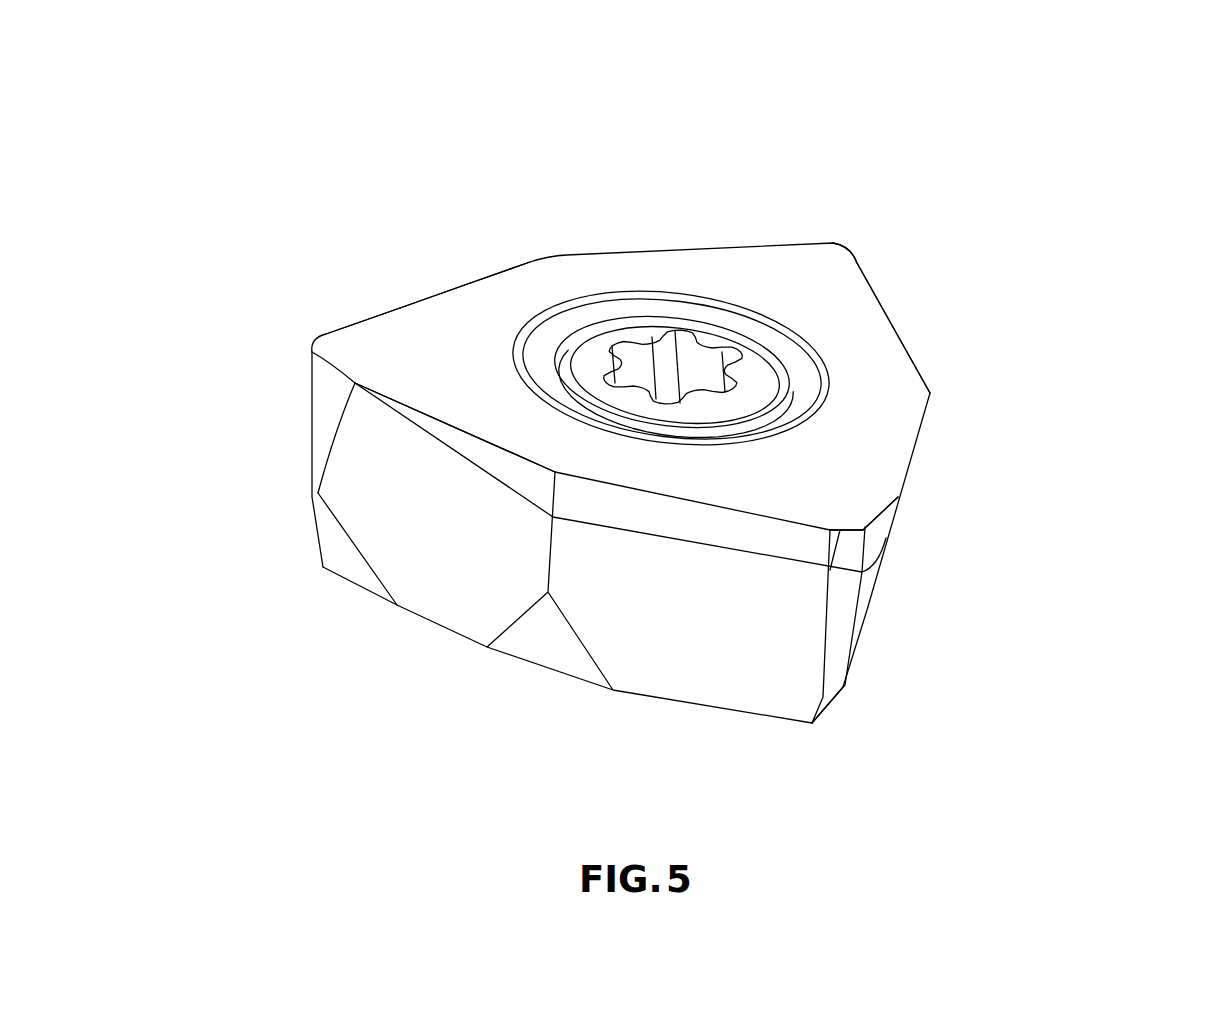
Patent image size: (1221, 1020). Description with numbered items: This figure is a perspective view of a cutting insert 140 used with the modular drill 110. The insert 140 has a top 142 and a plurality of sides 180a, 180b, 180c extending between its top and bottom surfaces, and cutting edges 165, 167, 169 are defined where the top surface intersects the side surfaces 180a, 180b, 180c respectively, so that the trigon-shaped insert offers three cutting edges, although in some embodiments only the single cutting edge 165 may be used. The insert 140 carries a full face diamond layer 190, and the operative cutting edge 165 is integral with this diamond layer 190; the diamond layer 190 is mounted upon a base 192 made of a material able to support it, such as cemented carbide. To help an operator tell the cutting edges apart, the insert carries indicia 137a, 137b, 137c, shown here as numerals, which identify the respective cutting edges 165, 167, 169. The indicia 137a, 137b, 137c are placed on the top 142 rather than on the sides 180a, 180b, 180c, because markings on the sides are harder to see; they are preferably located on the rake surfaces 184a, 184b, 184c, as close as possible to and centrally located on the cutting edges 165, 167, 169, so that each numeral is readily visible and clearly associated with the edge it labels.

The modular drill 110 is at (887, 74).
The top 142 is at (840, 290).
The cutting insert 140 is at (869, 611).
The indicia 137a is at (608, 453).
The indicia 137b is at (888, 346).
The indicia 137c is at (575, 275).
The cutting edge 165 is at (428, 412).
The cutting edge 167 is at (903, 367).
The cutting edge 169 is at (445, 303).
The side 180a is at (462, 593).
The side 180b is at (898, 478).
The side 180c is at (440, 292).
The rake surface 184a is at (502, 442).
The rake surface 184b is at (914, 430).
The rake surface 184c is at (497, 280).
The full face diamond layer 190 is at (372, 416).
The base 192 is at (380, 503).